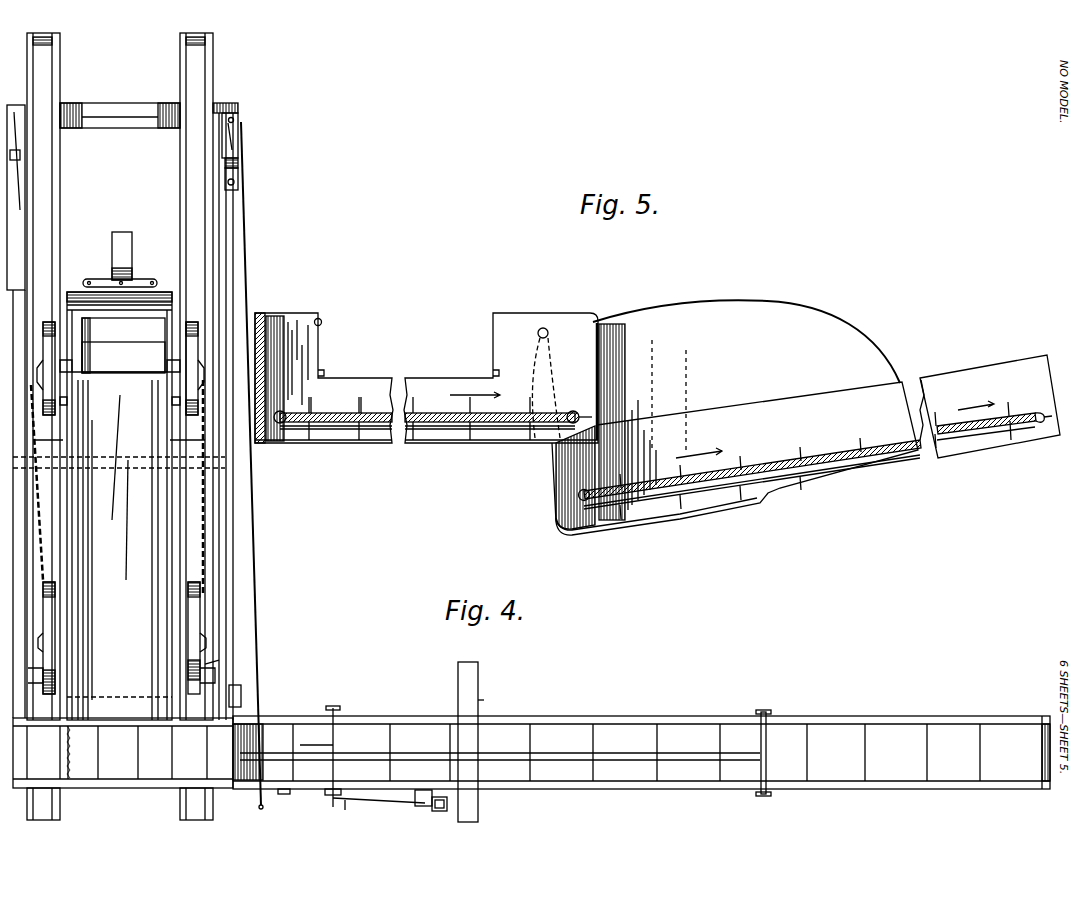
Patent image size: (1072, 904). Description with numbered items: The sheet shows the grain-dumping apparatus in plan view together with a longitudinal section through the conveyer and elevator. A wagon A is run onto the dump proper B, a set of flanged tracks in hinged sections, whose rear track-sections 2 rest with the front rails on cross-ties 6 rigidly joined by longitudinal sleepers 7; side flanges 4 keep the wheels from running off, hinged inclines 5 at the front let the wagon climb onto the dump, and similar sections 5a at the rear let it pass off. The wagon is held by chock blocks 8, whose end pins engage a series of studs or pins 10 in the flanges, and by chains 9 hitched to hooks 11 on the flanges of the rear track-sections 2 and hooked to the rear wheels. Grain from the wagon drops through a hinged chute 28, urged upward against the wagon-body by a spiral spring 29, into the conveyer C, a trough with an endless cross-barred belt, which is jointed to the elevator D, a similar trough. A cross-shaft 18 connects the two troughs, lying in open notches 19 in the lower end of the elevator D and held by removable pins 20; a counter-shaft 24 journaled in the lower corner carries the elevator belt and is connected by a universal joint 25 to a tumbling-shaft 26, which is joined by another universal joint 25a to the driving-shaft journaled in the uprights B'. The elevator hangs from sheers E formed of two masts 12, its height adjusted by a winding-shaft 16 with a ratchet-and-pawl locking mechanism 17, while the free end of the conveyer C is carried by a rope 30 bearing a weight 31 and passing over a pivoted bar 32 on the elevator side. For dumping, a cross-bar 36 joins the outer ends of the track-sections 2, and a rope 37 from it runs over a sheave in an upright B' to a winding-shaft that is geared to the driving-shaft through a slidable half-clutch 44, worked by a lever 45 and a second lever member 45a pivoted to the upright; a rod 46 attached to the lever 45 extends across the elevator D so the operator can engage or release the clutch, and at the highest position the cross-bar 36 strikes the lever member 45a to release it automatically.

In FIG. 4, the track-sections 2 is at (119, 376).
In FIG. 4, the side flanges 4 is at (27, 52).
In FIG. 4, the hinged inclines 5 is at (120, 804).
In FIG. 4, the rear sections 5a is at (47, 38).
In FIG. 4, the cross-ties 6 is at (124, 120).
In FIG. 4, the sleepers 7 is at (222, 264).
In FIG. 4, the blocks 8 is at (46, 682).
In FIG. 4, the chain 9 is at (205, 488).
In FIG. 4, the studs or pins 10 is at (219, 660).
In FIG. 4, the hooks 11 is at (203, 394).
In FIG. 4, the legs or masts 12 is at (458, 688).
In FIG. 4, the winding-shaft 16 is at (332, 745).
In FIG. 4, the locking mechanism 17 is at (330, 796).
In FIG. 5, the cross-shaft 18 is at (570, 411).
In FIG. 5, the open slots or notches 19 is at (548, 448).
In FIG. 5, the removable pins 20 is at (548, 328).
In FIG. 4, the counter-shaft 24 is at (500, 763).
In FIG. 5, the counter-shaft 24 is at (582, 500).
In FIG. 4, the universal joint 25 is at (240, 694).
In FIG. 4, the universal joint 25a is at (238, 186).
In FIG. 4, the tumbling rod or shaft 26 is at (235, 290).
In FIG. 4, the chute 28 is at (138, 697).
In FIG. 5, the chute 28 is at (383, 378).
In FIG. 4, the spiral spring 29 is at (69, 752).
In FIG. 5, the spiral spring 29 is at (322, 323).
In FIG. 4, the rope 30 is at (284, 795).
In FIG. 4, the weight 31 is at (439, 812).
In FIG. 4, the vertical post or bar 32 is at (418, 804).
In FIG. 4, the cross-bar 36 is at (112, 110).
In FIG. 4, the rope 37 is at (238, 108).
In FIG. 4, the slidable half-clutch 44 is at (238, 120).
In FIG. 4, the lever 45 is at (238, 174).
In FIG. 4, the second lever member 45a is at (238, 160).
In FIG. 4, the rod 46 is at (245, 232).
In FIG. 4, the wagon A is at (132, 440).
In FIG. 4, the dump proper B is at (166, 467).
In FIG. 4, the uprights B' is at (46, 411).
In FIG. 4, the conveyer C is at (138, 753).
In FIG. 5, the conveyer C is at (426, 391).
In FIG. 4, the elevator D is at (690, 704).
In FIG. 5, the elevator D is at (728, 360).
In FIG. 4, the sheers E is at (470, 706).